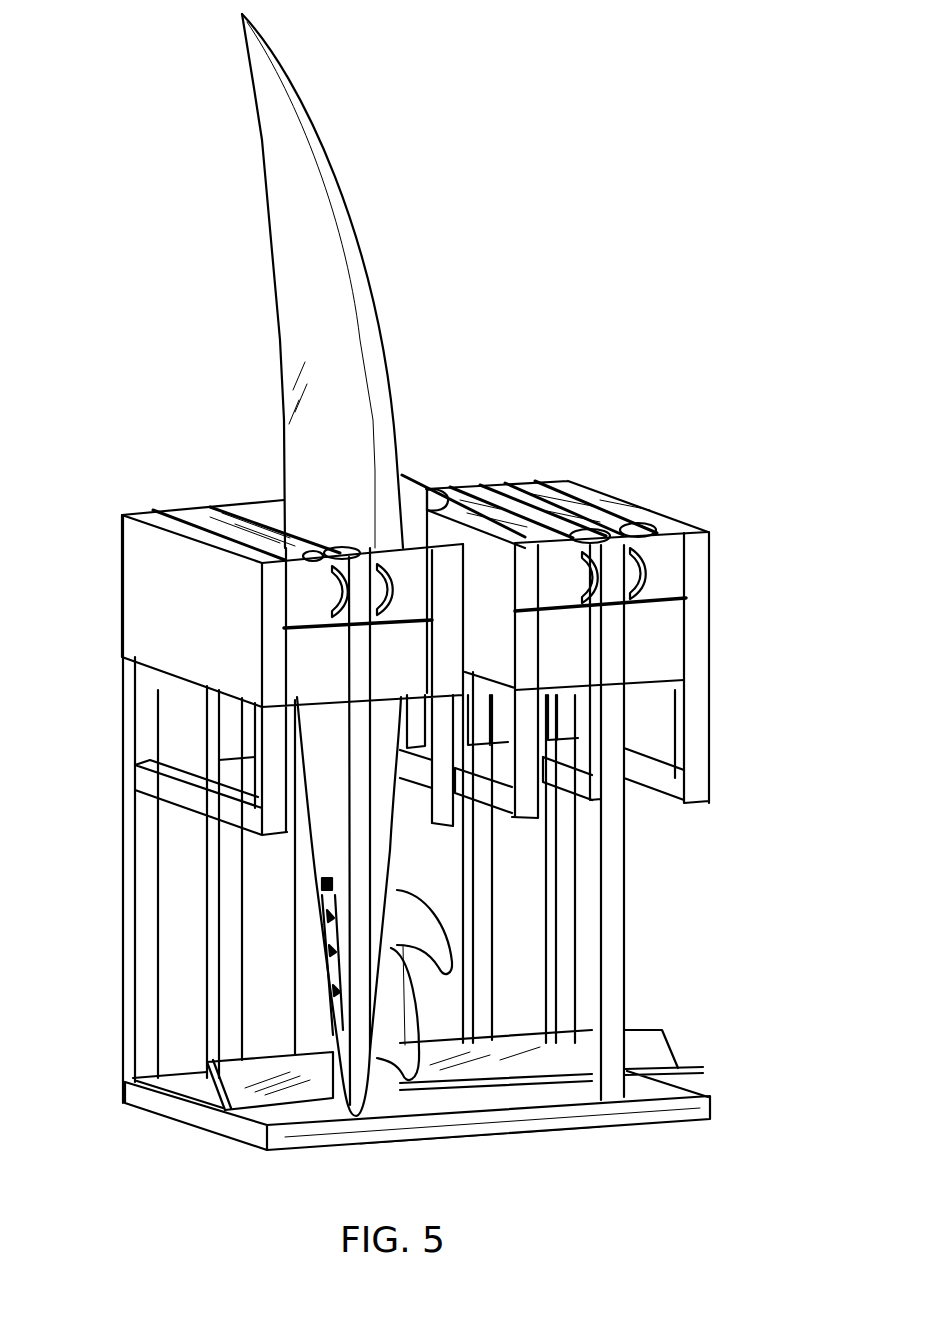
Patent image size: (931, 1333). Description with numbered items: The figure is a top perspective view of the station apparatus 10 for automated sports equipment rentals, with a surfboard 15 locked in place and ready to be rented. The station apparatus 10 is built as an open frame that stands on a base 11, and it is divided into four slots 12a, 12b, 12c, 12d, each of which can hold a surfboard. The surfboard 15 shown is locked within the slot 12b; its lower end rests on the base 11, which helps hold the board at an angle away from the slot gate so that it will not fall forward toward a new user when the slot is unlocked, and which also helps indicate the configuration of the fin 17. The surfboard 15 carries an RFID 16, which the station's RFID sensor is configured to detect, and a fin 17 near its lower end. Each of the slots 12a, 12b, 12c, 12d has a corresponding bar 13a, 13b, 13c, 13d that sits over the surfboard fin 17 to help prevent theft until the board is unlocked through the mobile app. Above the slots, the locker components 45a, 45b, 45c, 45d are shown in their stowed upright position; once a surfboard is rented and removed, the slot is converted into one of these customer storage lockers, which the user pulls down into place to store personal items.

The station apparatus 10 is at (737, 558).
The base 11 is at (210, 1087).
The slot 12a is at (290, 848).
The slot 12b is at (265, 488).
The slot 12c is at (533, 858).
The slot 12d is at (657, 707).
The bar 13a is at (331, 621).
The bar 13b is at (390, 622).
The bar 13c is at (582, 612).
The bar 13d is at (668, 603).
The surfboard 15 is at (340, 176).
The RFID 16 is at (325, 885).
The fin 17 is at (449, 990).
The locker component 45a is at (178, 511).
The locker component 45b is at (403, 478).
The locker component 45c is at (481, 505).
The locker component 45d is at (518, 484).